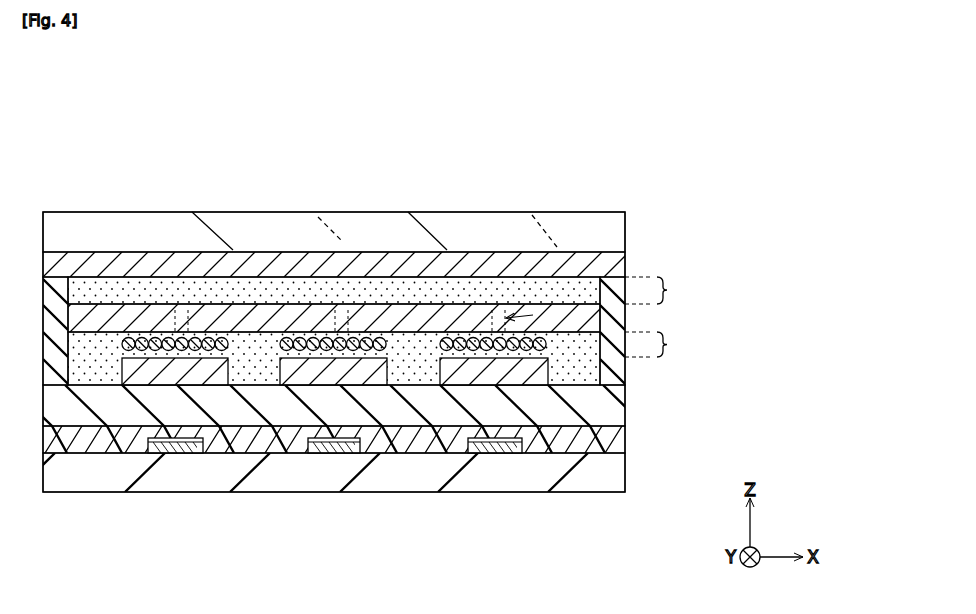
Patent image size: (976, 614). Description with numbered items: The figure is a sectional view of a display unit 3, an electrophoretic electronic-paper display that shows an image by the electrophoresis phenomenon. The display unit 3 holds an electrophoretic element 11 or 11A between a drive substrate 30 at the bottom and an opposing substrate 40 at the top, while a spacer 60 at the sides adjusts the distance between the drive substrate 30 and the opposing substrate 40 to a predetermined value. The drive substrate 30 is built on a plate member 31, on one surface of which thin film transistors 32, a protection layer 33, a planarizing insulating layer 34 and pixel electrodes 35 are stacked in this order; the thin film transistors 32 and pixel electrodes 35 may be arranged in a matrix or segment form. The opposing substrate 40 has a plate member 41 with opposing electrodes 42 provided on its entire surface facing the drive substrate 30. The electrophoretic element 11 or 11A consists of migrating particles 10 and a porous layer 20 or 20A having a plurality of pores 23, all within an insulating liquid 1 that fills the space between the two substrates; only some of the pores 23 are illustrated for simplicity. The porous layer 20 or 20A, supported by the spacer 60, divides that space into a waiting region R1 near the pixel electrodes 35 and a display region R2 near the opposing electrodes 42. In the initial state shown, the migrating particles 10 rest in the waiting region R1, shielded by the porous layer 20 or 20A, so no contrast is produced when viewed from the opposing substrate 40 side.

The display unit 3 is at (560, 79).
The opposing substrate 40 is at (356, 243).
The plate member 41 is at (135, 245).
The opposing electrodes 42 is at (173, 265).
The insulating liquid 1 is at (252, 283).
The migrating particles 10 is at (360, 332).
The porous layer 20 is at (351, 243).
The porous layer 20A is at (463, 315).
The pores 23 is at (539, 208).
The display region R2 is at (660, 290).
The waiting region R1 is at (660, 344).
The drive substrate 30 is at (352, 364).
The plate member 31 is at (104, 482).
The thin film transistors 32 is at (167, 453).
The protection layer 33 is at (223, 453).
The planarizing insulating layer 34 is at (297, 410).
The electrophoretic element 11 is at (334, 439).
The electrophoretic element 11A is at (420, 350).
The pixel electrodes 35 is at (488, 372).
The spacer 60 is at (612, 380).